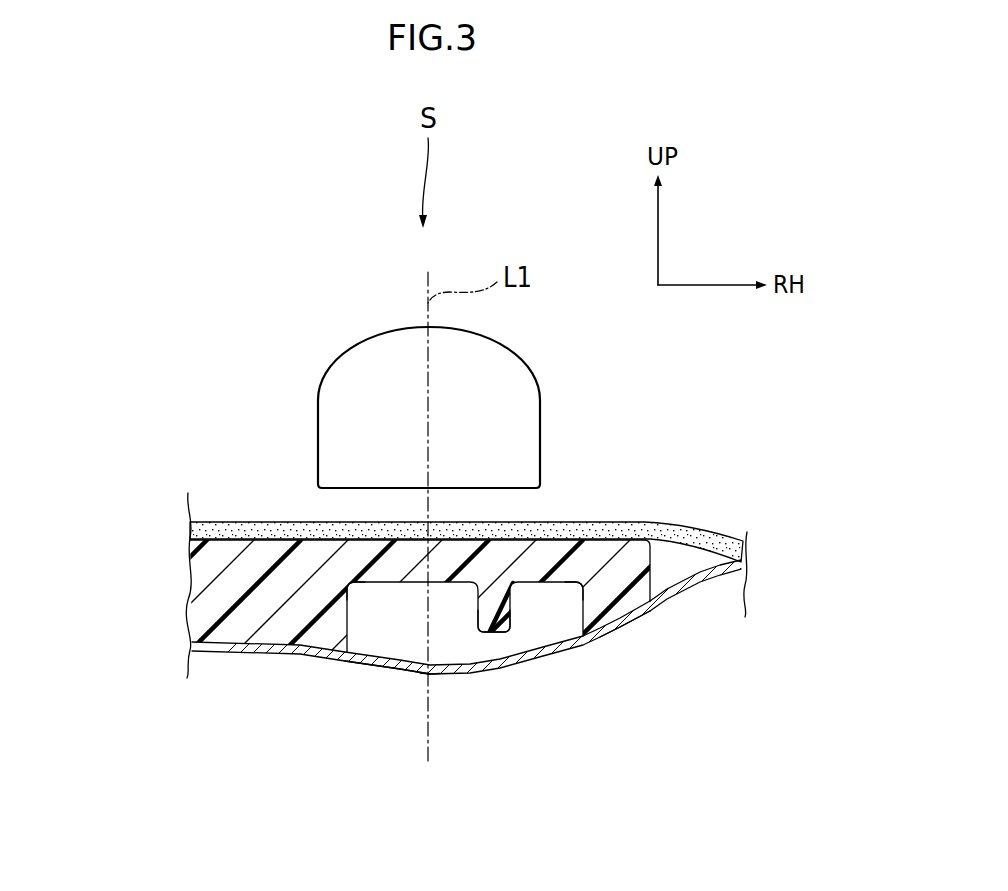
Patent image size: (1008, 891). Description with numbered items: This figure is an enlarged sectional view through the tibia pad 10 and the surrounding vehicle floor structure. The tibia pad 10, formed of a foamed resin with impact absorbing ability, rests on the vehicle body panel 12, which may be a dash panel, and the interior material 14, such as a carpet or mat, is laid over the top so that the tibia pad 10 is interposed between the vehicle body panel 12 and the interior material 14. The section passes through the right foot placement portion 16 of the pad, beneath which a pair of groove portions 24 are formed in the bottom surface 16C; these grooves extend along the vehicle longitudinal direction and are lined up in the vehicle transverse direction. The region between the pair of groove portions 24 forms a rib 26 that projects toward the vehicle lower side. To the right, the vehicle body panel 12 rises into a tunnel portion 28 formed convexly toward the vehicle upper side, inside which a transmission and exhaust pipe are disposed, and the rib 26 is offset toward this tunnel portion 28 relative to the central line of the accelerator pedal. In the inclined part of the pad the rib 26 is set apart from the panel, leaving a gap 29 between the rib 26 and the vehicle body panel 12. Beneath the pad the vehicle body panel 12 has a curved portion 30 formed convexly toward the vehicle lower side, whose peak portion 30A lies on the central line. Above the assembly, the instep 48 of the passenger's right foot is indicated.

The tibia pad 10 is at (463, 631).
The vehicle body panel 12 is at (230, 652).
The interior material 14 is at (217, 520).
The right foot placement portion 16 is at (412, 609).
The bottom surface 16C is at (623, 622).
The groove portions 24 is at (348, 615).
The rib 26 is at (475, 620).
The tunnel portion 28 is at (693, 576).
The gap 29 is at (503, 644).
The curved portion 30 is at (387, 672).
The peak portion 30A is at (427, 674).
The instep 48 is at (523, 368).